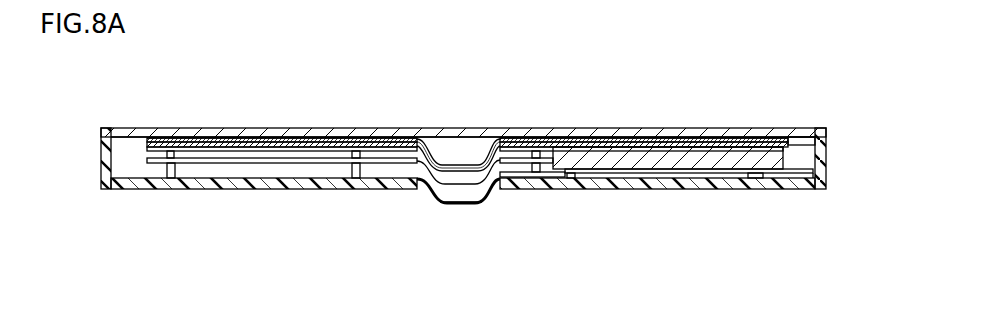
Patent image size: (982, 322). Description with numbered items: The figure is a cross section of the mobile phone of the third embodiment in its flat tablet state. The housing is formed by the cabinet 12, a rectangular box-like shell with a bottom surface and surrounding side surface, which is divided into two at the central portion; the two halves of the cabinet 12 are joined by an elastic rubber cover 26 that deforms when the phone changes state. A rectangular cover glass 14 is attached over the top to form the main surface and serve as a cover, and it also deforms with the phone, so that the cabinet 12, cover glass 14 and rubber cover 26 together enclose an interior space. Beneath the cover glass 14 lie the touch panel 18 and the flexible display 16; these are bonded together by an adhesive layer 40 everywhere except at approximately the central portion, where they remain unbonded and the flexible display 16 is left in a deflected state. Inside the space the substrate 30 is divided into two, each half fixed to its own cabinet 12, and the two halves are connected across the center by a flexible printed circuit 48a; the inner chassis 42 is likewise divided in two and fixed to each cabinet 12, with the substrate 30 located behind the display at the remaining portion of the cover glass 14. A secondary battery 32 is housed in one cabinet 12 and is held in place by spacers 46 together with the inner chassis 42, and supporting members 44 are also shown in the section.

The cabinet 12 is at (338, 184).
The cover glass 14 is at (778, 132).
The flexible display 16 is at (643, 137).
The touch panel 18 is at (732, 139).
The rubber cover 26 is at (462, 204).
The substrate 30 is at (252, 162).
The secondary battery 32 is at (640, 168).
The adhesive layer 40 is at (682, 143).
The inner chassis 42 is at (304, 148).
The support pillars 44 is at (173, 178).
The spacers 46 is at (572, 180).
The flexible printed circuit 48a is at (447, 203).